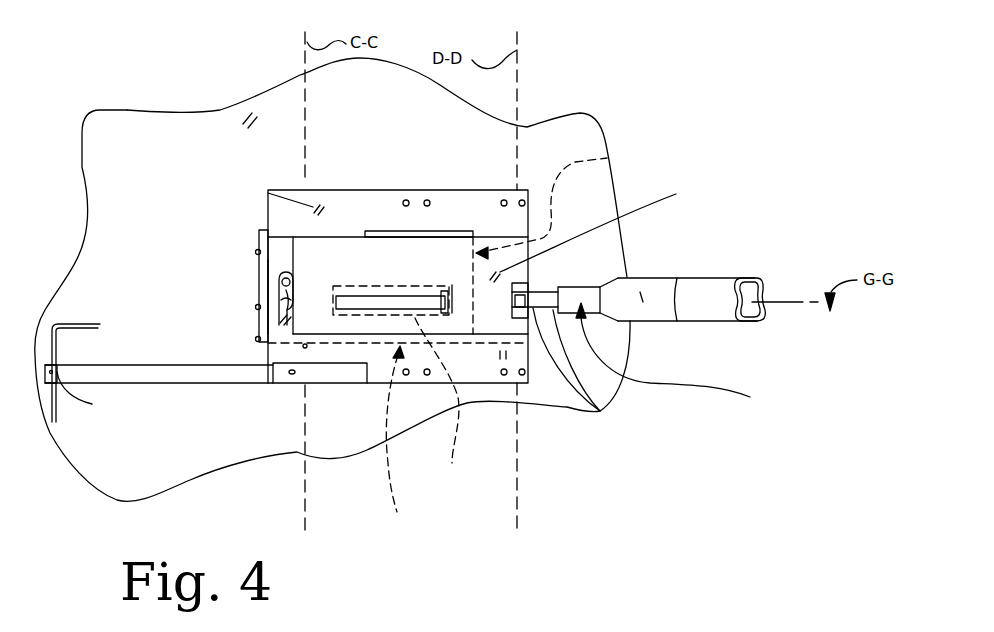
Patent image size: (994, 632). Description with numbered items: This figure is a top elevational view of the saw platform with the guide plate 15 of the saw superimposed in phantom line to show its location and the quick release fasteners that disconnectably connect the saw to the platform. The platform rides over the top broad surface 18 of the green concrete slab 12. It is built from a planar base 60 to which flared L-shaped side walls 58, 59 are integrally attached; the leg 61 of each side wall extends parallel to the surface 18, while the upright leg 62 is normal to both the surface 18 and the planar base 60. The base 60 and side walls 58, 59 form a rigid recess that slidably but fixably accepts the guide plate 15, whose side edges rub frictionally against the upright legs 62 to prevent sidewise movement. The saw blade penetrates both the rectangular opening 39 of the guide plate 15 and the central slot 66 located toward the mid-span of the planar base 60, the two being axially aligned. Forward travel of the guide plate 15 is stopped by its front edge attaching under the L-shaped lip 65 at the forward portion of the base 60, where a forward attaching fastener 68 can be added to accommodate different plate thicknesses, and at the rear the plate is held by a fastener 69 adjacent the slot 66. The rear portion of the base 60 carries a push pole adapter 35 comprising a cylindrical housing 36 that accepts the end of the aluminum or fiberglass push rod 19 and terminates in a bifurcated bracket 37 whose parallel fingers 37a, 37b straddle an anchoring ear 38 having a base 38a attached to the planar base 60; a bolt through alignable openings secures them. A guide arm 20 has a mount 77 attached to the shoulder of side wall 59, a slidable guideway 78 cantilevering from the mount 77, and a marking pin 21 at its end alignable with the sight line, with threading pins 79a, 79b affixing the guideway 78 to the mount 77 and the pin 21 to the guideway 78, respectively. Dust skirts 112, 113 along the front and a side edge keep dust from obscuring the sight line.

The green concrete slab 12 is at (123, 100).
The guide plate 15 is at (553, 203).
The top surface 18 is at (240, 115).
The push rod 19 is at (705, 297).
The guide arm 20 is at (267, 384).
The marking pin 21 is at (62, 348).
The push pole adapter 35 is at (585, 276).
The cylindrical housing 36 is at (643, 302).
The bifurcated bracket 37 is at (669, 362).
The finger 37a is at (600, 411).
The finger 37b is at (576, 360).
The anchoring ear 38 is at (512, 297).
The base 38a is at (520, 277).
The rectangular opening 39 is at (437, 403).
The L-shaped side wall 58 is at (449, 185).
The L-shaped side wall 59 is at (522, 392).
The planar base 60 is at (598, 227).
The leg 61 is at (268, 193).
The upright leg 62 is at (267, 264).
The L-shaped lip 65 is at (278, 318).
The central slot 66 is at (347, 303).
The forward attaching fastener 68 is at (290, 294).
The fastener 69 is at (445, 290).
The mount 77 is at (320, 375).
The slidable guideway 78 is at (173, 372).
The threading pin 79a is at (300, 390).
The threading pin 79b is at (90, 394).
The dust skirt 112 is at (245, 302).
The dust skirt 113 is at (396, 440).